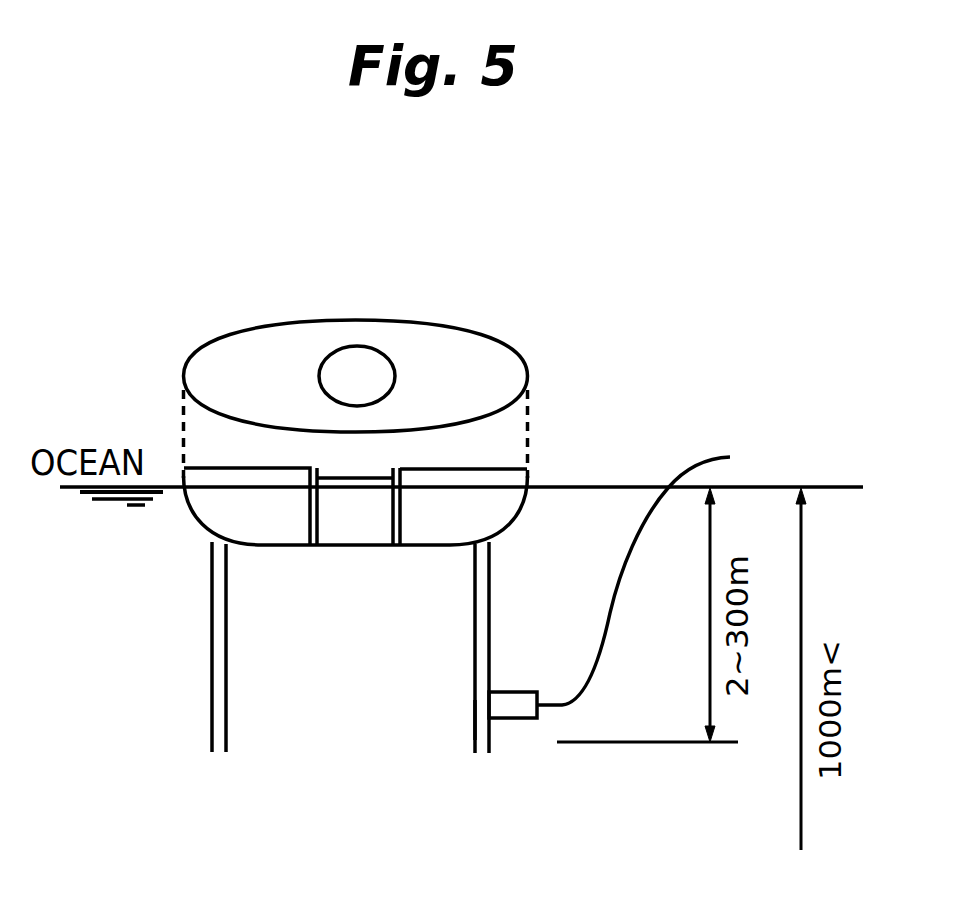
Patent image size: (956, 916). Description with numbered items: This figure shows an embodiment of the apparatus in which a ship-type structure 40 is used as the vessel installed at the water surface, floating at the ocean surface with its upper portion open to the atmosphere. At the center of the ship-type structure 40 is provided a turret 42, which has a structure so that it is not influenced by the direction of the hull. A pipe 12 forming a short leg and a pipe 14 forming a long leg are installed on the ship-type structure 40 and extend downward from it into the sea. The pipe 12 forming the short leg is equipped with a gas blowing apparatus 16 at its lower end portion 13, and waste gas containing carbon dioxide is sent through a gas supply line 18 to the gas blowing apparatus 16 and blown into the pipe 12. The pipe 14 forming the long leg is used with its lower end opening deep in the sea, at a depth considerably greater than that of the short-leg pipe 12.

The ship-type structure 40 is at (492, 327).
The turret 42 is at (357, 509).
The pipe forming a long leg 14 is at (210, 603).
The pipe forming a short leg 12 is at (490, 637).
The lower end portion 13 is at (475, 712).
The gas blowing apparatus 16 is at (512, 717).
The gas supply line 18 is at (607, 631).